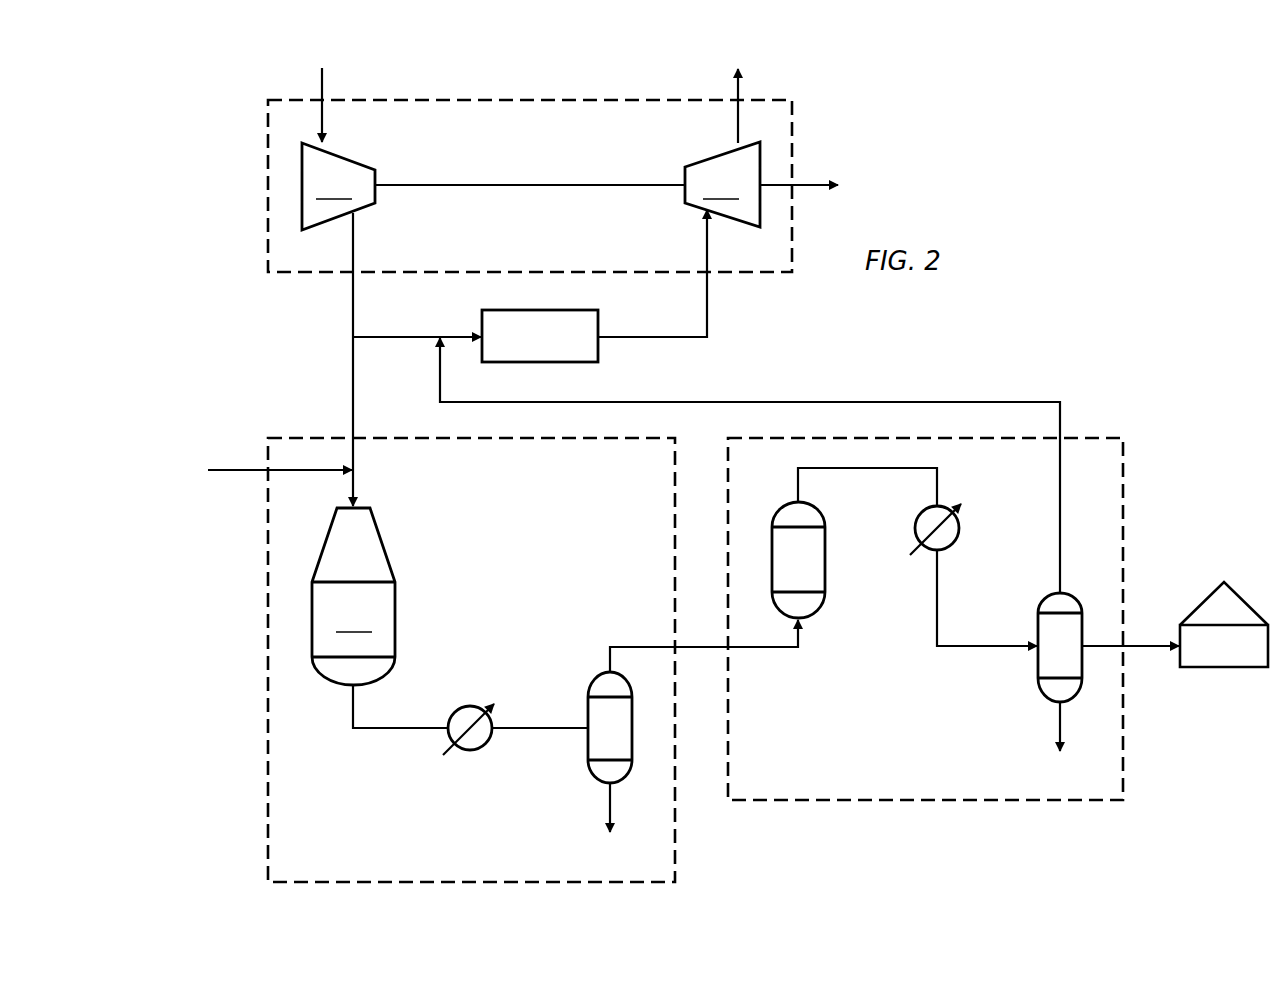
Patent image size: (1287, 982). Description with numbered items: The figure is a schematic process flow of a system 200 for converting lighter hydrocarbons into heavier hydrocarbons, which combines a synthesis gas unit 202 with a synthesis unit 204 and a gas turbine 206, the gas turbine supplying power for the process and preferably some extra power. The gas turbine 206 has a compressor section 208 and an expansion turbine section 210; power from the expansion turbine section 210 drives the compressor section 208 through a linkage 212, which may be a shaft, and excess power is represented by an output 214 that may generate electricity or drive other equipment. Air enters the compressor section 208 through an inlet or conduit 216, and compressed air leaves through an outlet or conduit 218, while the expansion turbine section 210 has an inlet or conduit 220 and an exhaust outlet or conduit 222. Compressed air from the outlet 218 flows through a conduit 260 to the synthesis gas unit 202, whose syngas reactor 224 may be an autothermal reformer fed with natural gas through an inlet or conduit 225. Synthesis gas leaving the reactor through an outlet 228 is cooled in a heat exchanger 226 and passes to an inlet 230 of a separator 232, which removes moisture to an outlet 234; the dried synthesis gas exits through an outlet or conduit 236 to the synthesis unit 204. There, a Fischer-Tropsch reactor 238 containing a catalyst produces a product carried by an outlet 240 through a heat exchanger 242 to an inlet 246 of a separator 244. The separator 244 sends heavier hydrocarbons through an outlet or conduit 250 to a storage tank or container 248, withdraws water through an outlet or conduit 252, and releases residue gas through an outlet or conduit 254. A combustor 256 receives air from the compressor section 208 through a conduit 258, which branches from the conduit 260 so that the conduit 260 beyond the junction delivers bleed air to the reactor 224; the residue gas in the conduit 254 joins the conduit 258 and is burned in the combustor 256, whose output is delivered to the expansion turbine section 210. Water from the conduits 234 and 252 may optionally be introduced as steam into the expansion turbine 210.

The system 200 is at (180, 100).
The synthesis gas unit 202 is at (268, 820).
The synthesis unit 204 is at (1040, 800).
The gas turbine 206 is at (268, 168).
The compressor section 208 is at (338, 186).
The expansion turbine section 210 is at (722, 184).
The linkage 212 is at (530, 184).
The output 214 is at (812, 182).
The inlet or conduit 216 is at (322, 116).
The outlet or conduit 218 is at (355, 246).
The inlet or conduit 220 is at (707, 304).
The outlet or conduit 222 is at (738, 118).
The syngas reactor 224 is at (353, 596).
The inlet or conduit 225 is at (232, 470).
The heat exchanger 226 is at (474, 752).
The outlet 228 is at (392, 730).
The inlet 230 is at (545, 730).
The separator 232 is at (588, 706).
The outlet 234 is at (610, 796).
The outlet or conduit 236 is at (635, 647).
The Fischer-Tropsch reactor 238 is at (826, 560).
The outlet 240 is at (862, 469).
The heat exchanger 242 is at (960, 528).
The separator 244 is at (1036, 668).
The inlet 246 is at (937, 614).
The storage tank or container 248 is at (1250, 668).
The outlet or conduit 250 is at (1142, 646).
The outlet or conduit 252 is at (1058, 718).
The outlet or conduit 254 is at (1060, 556).
The combustor 256 is at (598, 356).
The conduit 258 is at (412, 340).
The conduit 260 is at (353, 377).